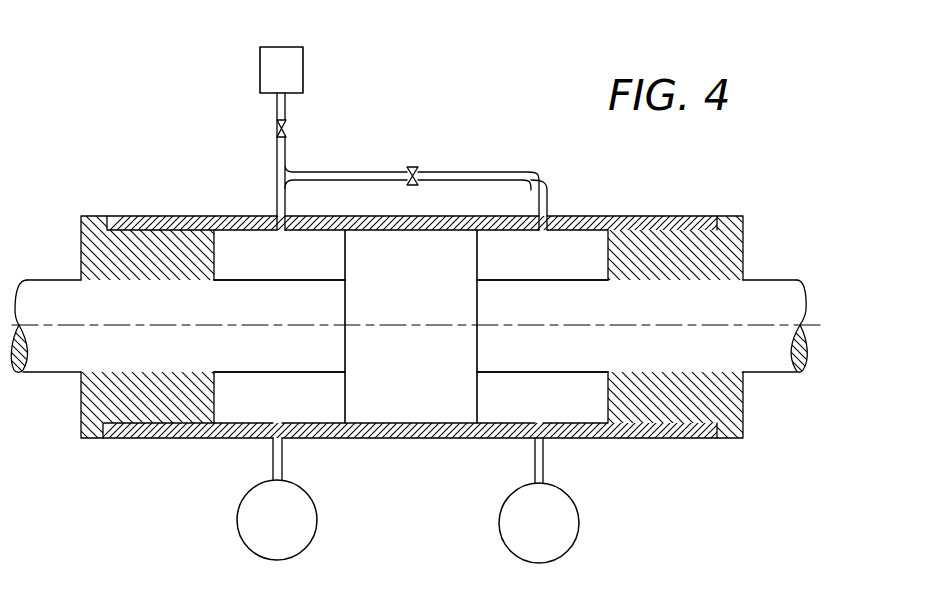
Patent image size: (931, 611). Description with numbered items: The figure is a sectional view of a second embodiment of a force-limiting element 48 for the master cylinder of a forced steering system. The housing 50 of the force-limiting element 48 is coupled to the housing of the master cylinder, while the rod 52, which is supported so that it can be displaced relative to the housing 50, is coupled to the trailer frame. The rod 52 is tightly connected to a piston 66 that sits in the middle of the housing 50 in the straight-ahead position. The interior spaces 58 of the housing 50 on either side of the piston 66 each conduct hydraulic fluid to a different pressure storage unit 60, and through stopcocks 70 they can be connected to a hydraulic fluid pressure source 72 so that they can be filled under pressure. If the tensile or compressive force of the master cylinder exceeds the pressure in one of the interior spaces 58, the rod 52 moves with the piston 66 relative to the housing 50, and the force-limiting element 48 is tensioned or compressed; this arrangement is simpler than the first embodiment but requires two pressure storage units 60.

The force-limiting element 48 is at (130, 498).
The housing 50 is at (377, 435).
The rod 52 is at (770, 363).
The interior spaces 58 is at (290, 405).
The pressure storage units 60 is at (305, 525).
The piston 66 is at (430, 408).
The stopcocks 70 is at (276, 126).
The hydraulic fluid pressure source 72 is at (297, 73).